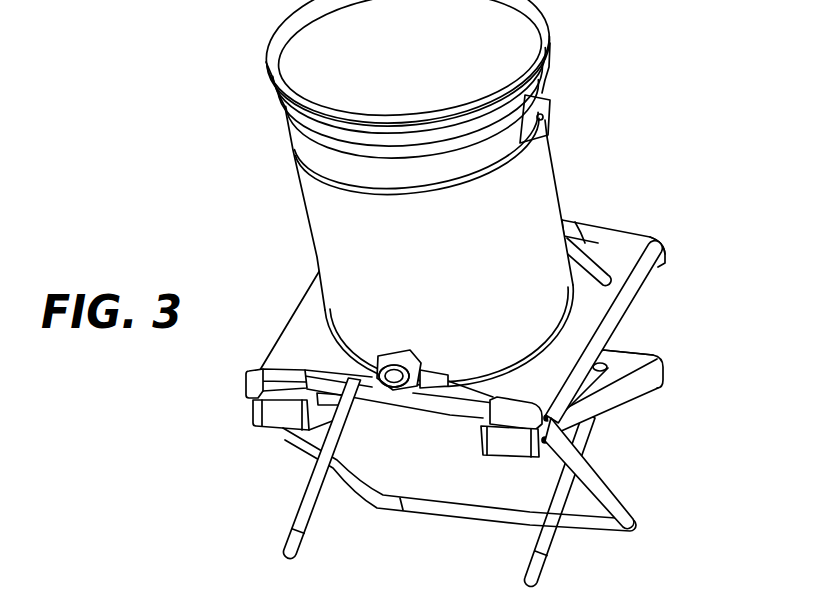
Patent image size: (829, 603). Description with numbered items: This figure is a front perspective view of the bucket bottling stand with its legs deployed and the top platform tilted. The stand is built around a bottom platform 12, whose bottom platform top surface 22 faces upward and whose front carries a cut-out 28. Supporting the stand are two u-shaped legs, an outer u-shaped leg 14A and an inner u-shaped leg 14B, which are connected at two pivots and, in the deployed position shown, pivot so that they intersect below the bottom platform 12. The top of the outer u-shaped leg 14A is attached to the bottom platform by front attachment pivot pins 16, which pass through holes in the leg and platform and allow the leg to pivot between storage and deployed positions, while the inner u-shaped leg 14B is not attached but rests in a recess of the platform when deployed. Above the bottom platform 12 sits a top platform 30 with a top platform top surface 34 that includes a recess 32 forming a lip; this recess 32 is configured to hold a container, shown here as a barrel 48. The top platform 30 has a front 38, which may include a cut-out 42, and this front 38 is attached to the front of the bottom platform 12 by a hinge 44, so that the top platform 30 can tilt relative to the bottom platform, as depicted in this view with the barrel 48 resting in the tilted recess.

The bottom platform 12 is at (648, 388).
The outer u-shaped leg 14A is at (636, 523).
The inner u-shaped leg 14B is at (554, 550).
The front attachment pivot pins 16 is at (590, 487).
The bottom platform top surface 22 is at (645, 353).
The cut-out 28 is at (418, 403).
The cut-out 42 is at (394, 376).
The top platform 30 is at (600, 226).
The recess 32 is at (580, 227).
The top platform top surface 34 is at (652, 240).
The front of top platform 38 is at (322, 392).
The hinge 44 is at (548, 441).
The barrel 48 is at (315, 212).